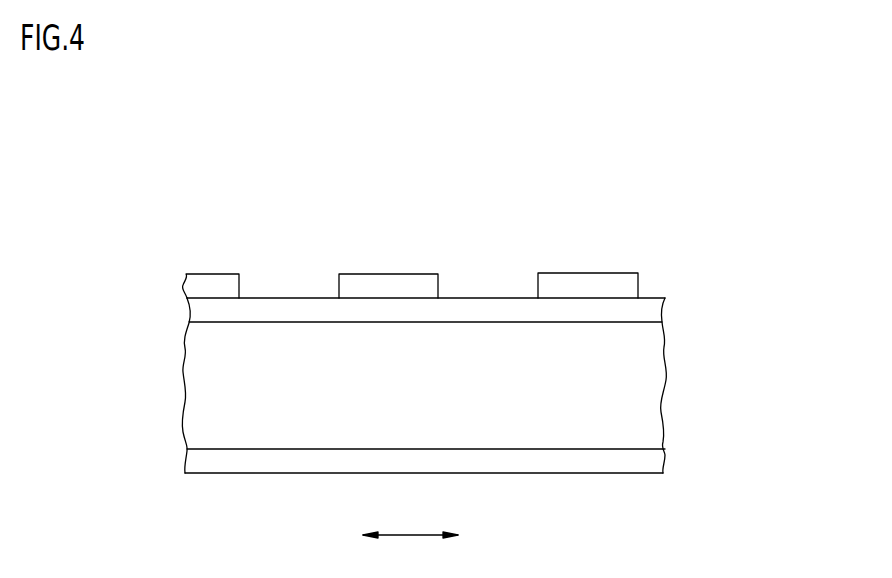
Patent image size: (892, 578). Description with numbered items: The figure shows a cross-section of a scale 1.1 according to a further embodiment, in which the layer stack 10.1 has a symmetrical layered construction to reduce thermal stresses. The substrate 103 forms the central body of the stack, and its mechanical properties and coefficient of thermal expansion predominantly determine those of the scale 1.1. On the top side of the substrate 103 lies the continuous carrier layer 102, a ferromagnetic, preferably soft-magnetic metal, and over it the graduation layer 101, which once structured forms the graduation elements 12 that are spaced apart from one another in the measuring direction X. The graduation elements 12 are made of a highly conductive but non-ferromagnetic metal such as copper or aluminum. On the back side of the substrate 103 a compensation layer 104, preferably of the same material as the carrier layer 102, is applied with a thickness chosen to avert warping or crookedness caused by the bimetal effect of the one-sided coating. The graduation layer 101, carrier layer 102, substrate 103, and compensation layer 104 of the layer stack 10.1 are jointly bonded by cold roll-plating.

The scale 1.1 is at (645, 234).
The layer stack 10.1 is at (148, 273).
The graduation elements 12 is at (213, 287).
The graduation layer 101 is at (628, 278).
The carrier layer 102 is at (648, 312).
The substrate 103 is at (640, 387).
The compensation layer 104 is at (633, 460).
The measuring direction X is at (410, 518).